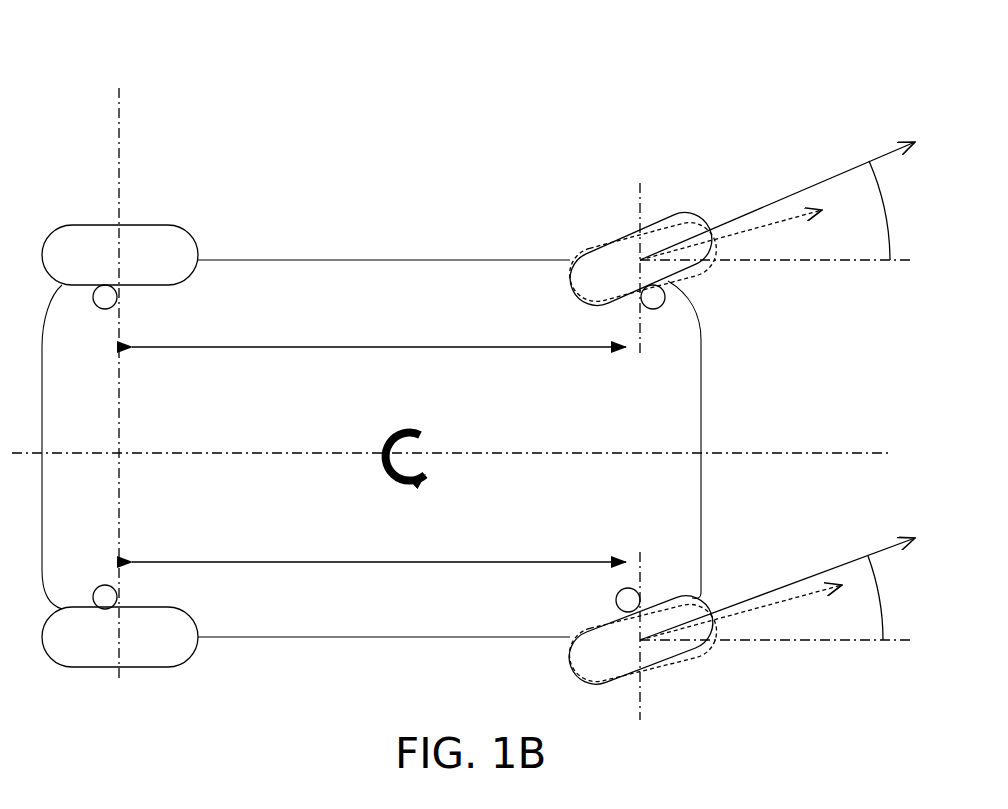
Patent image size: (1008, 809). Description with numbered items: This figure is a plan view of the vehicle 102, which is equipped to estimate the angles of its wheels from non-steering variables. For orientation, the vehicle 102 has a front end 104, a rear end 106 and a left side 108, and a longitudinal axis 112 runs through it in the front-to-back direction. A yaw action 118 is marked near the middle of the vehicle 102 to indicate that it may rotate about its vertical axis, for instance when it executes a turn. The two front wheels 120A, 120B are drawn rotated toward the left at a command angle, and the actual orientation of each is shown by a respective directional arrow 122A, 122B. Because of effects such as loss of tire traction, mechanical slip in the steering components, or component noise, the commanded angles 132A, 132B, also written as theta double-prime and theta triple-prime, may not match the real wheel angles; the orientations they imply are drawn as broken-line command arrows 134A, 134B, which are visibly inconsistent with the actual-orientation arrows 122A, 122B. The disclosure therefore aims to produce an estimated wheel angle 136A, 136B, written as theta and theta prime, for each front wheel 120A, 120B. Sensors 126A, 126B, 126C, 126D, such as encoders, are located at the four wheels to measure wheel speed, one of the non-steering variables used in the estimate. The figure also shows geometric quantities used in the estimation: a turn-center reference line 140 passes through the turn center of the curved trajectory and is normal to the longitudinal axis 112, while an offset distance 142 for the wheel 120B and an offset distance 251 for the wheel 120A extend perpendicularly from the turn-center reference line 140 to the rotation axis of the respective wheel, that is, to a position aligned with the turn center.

The vehicle 102 is at (527, 165).
The front end 104 is at (712, 430).
The rear end 106 is at (37, 318).
The left side 108 is at (403, 237).
The longitudinal axis 112 is at (180, 453).
The yaw action 118 is at (395, 433).
The front wheel 120A is at (590, 688).
The front wheel 120B is at (682, 212).
The directional arrow 122A is at (882, 548).
The directional arrow 122B is at (882, 158).
The sensor 126A is at (615, 605).
The sensor 126B is at (660, 312).
The sensor 126C is at (97, 585).
The sensor 126D is at (97, 308).
The commanded angle 132A is at (820, 592).
The commanded angle 132B is at (797, 218).
The command arrow 134A is at (753, 605).
The command arrow 134B is at (777, 220).
The estimated wheel angle 136A is at (870, 582).
The estimated wheel angle 136B is at (882, 194).
The turn-center reference line 140 is at (120, 133).
The offset distance 142 is at (228, 347).
The offset distance 251 is at (257, 570).